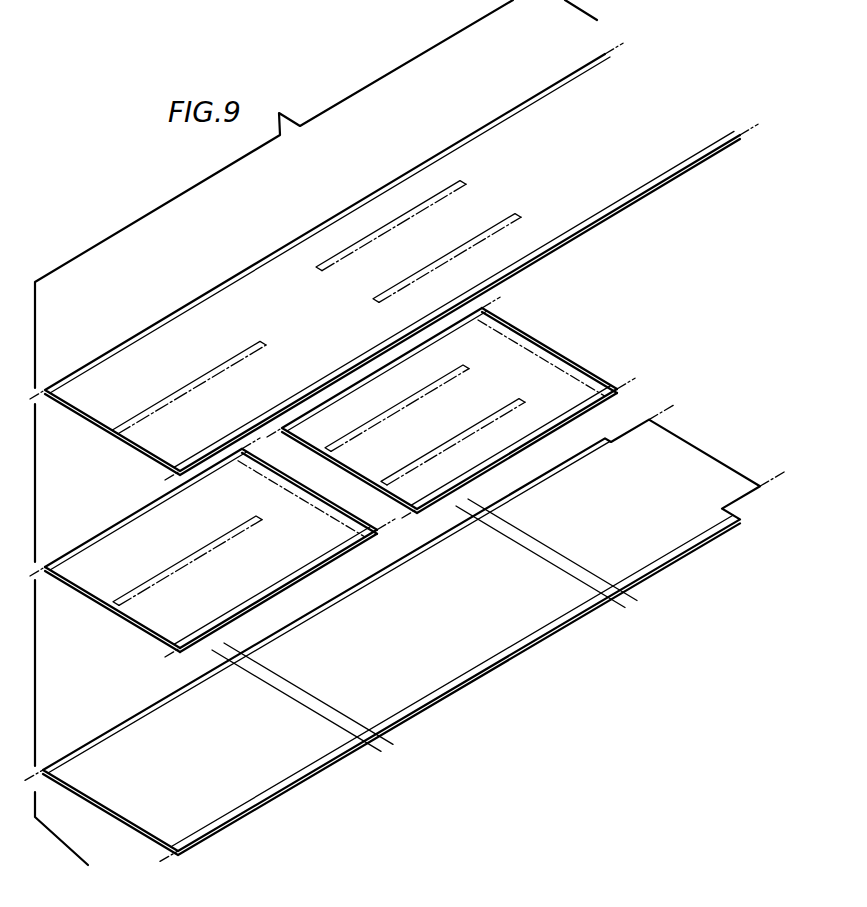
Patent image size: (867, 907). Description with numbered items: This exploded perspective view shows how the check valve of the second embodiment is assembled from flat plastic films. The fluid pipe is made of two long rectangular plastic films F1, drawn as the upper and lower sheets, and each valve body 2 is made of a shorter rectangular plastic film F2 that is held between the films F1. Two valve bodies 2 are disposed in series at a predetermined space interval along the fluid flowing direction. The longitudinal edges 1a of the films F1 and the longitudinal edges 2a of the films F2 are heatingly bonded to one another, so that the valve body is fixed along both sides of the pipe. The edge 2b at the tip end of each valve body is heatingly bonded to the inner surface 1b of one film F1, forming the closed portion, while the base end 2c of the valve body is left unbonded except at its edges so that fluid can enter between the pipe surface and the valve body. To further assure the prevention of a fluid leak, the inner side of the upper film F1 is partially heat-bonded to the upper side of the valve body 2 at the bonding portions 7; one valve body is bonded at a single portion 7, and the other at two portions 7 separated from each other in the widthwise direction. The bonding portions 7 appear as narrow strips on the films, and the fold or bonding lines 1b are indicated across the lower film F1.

The longitudinal edges of the fluid pipe 1a is at (245, 273).
The inner side of a flat surface of the fluid pipe 1b is at (558, 558).
The valve body 2 is at (336, 472).
The longitudinal edges of the valve body 2a is at (162, 500).
The edge of the tip end of the valve body 2b is at (262, 472).
The base end of the valve body 2c is at (82, 602).
The bonding portion 7 is at (267, 340).
The rectangular plastic films F1 is at (405, 452).
The rectangular plastic film F2 is at (545, 380).